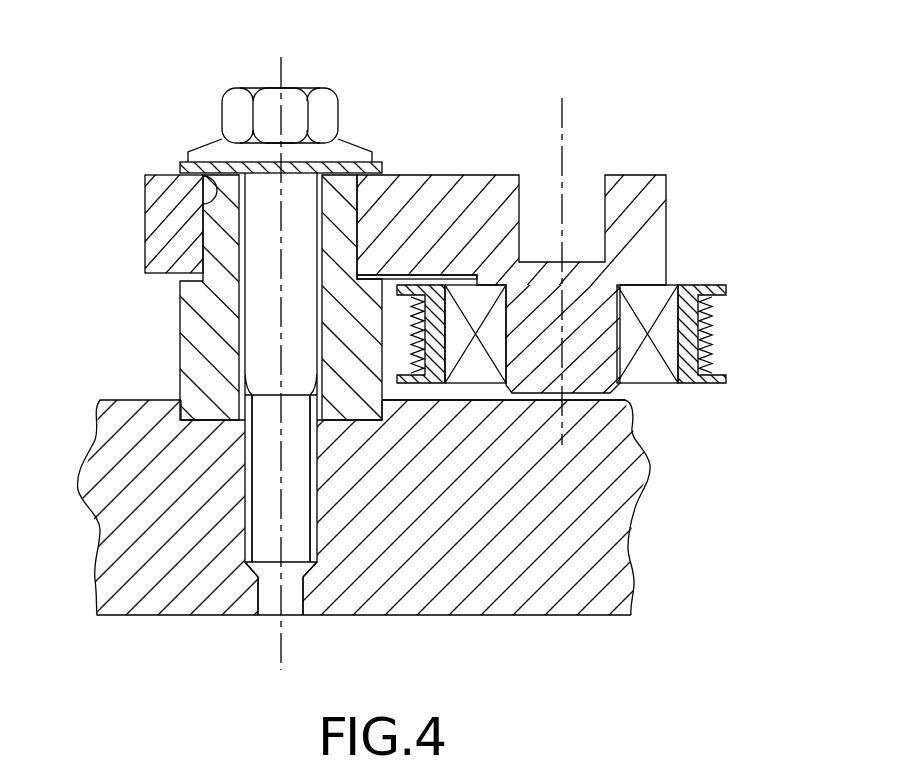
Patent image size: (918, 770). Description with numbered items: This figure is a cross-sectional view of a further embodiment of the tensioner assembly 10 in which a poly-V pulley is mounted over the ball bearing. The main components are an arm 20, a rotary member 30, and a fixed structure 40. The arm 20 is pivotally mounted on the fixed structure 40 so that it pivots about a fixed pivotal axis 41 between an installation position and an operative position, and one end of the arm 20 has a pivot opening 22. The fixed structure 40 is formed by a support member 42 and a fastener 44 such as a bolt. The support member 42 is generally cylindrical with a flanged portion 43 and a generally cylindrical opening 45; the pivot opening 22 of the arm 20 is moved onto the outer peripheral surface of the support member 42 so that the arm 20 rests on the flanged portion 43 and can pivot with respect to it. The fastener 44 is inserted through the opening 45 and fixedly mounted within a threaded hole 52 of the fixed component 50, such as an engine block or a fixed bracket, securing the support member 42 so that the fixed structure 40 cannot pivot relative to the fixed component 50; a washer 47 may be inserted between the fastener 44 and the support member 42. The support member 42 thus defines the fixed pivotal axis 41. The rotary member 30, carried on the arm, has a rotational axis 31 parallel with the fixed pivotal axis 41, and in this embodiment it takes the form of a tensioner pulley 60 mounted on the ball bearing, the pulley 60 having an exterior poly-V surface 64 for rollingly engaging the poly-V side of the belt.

The tensioner assembly 10 is at (674, 121).
The arm 20 is at (657, 173).
The pivot opening 22 is at (214, 188).
The rotary member 30 is at (664, 399).
The rotational axis 31 is at (564, 142).
The fixed structure 40 is at (339, 86).
The fixed pivotal axis 41 is at (278, 77).
The support member 42 is at (218, 233).
The flanged portion 43 is at (197, 333).
The fastener 44 is at (306, 238).
The cylindrical opening 45 is at (240, 335).
The washer 47 is at (362, 172).
The fixed component 50 is at (614, 597).
The threaded hole 52 is at (313, 523).
The tensioner pulley 60 is at (718, 281).
The exterior poly-V surface 64 is at (712, 355).